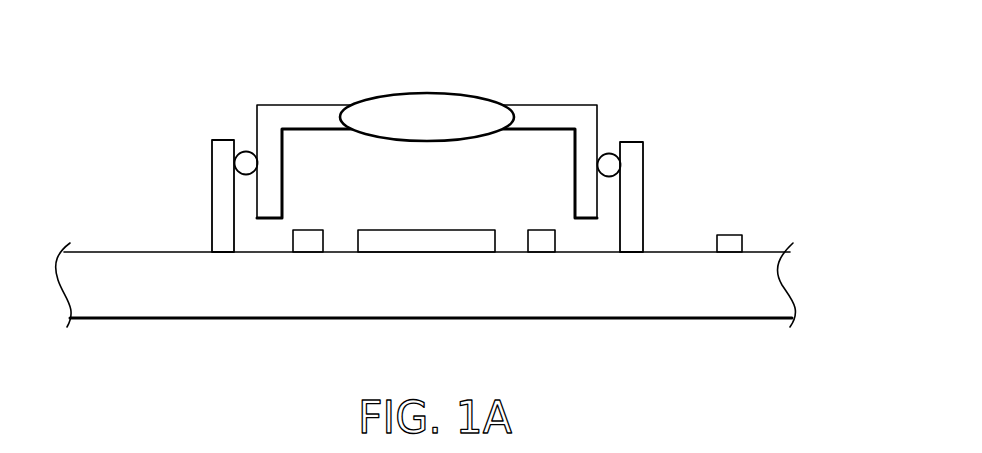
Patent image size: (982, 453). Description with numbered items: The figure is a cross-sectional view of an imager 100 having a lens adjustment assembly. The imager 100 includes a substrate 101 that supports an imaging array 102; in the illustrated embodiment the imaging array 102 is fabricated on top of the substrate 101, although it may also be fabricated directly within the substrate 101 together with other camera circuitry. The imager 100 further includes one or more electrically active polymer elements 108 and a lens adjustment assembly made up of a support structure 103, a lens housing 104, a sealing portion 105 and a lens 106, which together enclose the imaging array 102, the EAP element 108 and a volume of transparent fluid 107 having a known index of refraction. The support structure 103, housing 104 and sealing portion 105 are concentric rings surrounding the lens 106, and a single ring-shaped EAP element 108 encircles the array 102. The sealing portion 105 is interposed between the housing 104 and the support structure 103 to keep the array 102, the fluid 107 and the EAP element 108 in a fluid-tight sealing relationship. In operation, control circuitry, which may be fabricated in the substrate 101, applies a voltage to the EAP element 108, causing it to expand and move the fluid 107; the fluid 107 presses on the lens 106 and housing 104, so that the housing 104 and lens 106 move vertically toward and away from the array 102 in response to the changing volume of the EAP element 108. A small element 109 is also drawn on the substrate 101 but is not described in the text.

The imager 100 is at (123, 82).
The substrate 101 is at (742, 302).
The imaging array 102 is at (393, 243).
The support structure 103 is at (222, 175).
The lens housing 104 is at (285, 118).
The sealing portion 105 is at (605, 157).
The lens 106 is at (443, 127).
The transparent fluid 107 is at (347, 181).
The electrically active polymer (EAP) element 108 is at (545, 243).
The solder ball / contact 109 is at (735, 240).